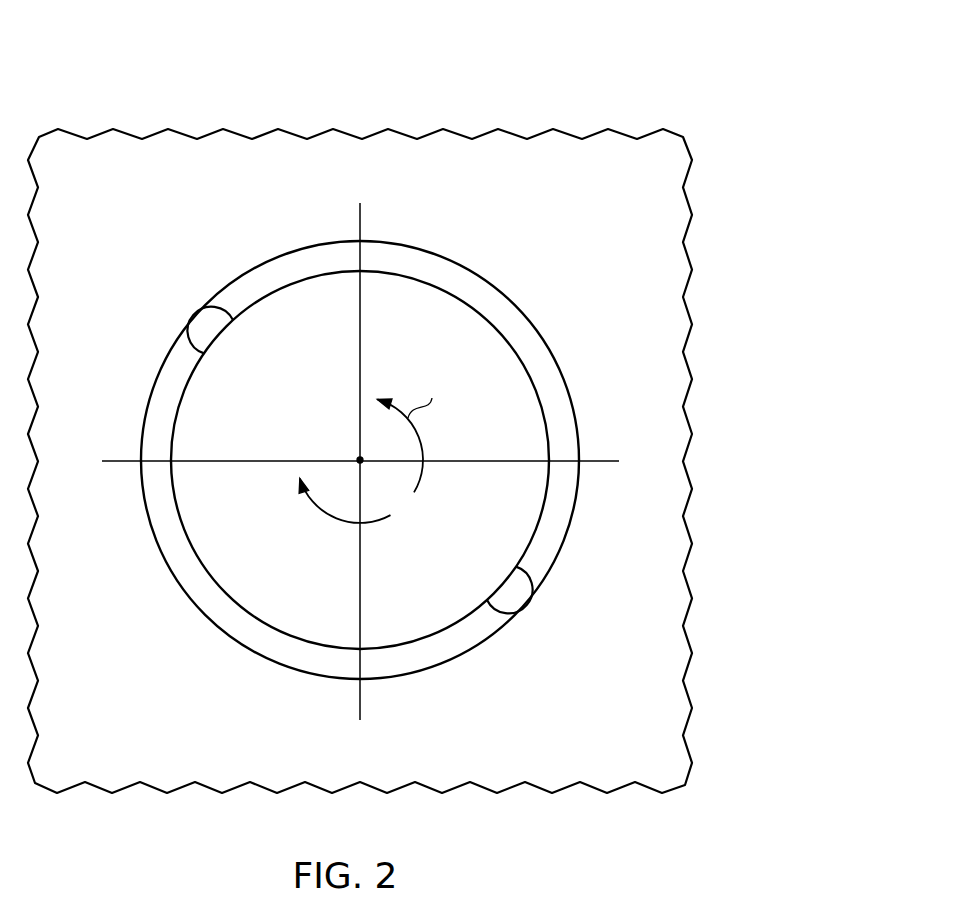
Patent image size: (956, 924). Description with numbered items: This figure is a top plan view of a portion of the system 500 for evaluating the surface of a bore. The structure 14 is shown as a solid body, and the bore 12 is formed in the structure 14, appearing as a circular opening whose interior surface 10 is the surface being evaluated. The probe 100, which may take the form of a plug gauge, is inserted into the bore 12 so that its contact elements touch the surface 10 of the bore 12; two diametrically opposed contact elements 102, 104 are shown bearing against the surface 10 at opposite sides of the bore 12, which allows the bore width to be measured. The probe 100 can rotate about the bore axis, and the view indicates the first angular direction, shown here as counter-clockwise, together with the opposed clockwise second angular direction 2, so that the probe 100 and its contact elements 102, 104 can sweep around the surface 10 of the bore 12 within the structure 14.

The system for evaluating the surface of a bore 500 is at (433, 405).
The structure 14 is at (667, 144).
The surface of the bore 10 is at (442, 262).
The bore 12 is at (360, 443).
The probe 100 is at (540, 400).
The contact element 102 is at (198, 324).
The contact element 104 is at (528, 595).
The rotation direction 2 is at (320, 512).